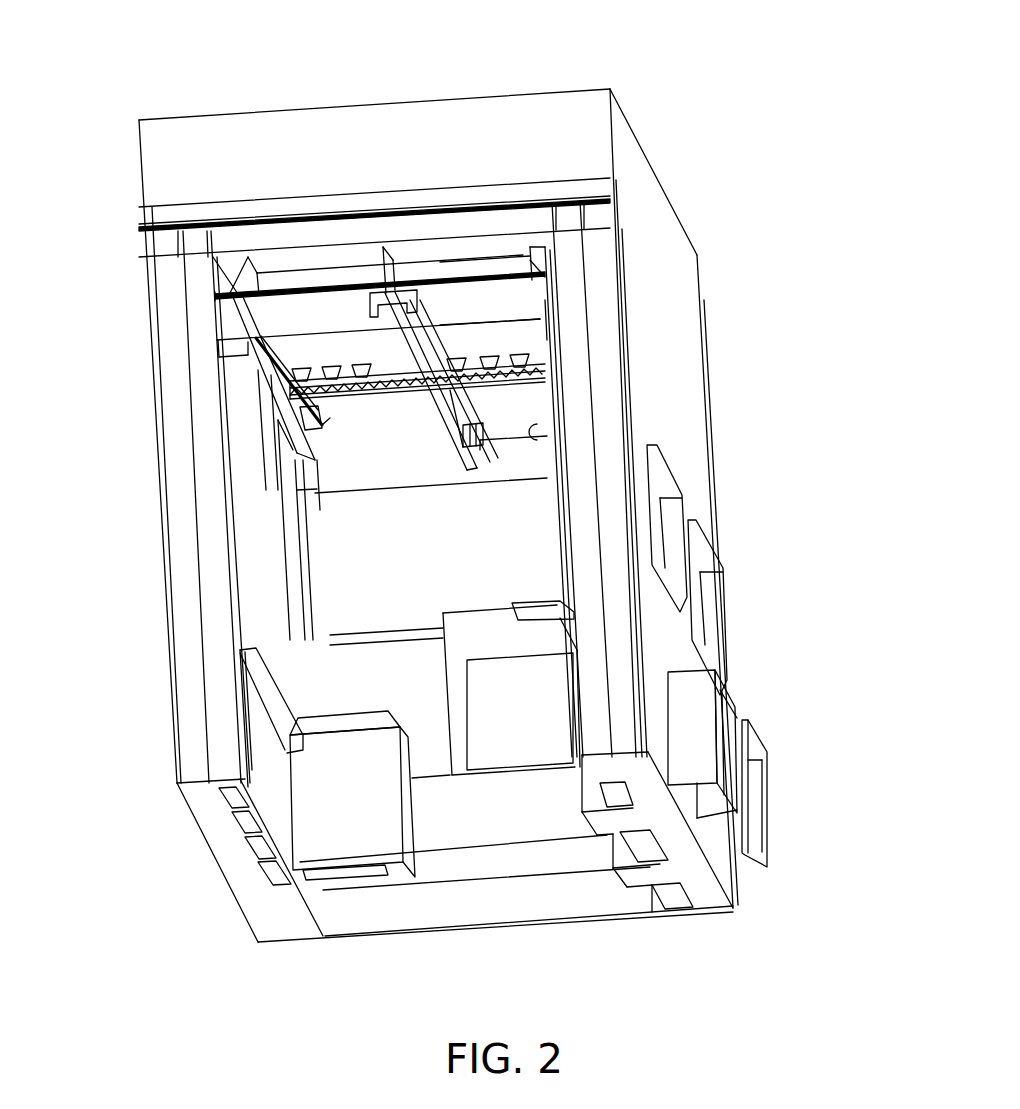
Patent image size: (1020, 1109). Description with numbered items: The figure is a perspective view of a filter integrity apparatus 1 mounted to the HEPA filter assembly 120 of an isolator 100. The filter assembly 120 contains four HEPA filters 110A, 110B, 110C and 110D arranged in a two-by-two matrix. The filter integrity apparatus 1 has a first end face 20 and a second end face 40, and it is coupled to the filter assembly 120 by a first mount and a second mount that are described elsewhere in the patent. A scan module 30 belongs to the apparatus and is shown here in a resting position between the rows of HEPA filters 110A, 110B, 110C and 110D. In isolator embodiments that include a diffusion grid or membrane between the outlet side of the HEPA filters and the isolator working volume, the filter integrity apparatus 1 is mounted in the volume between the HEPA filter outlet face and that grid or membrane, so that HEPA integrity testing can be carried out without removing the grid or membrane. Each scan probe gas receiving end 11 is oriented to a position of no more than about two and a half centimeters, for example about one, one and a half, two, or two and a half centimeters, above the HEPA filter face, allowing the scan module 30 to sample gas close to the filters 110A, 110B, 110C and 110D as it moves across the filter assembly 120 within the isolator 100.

The isolator 100 is at (165, 608).
The filter integrity apparatus 1 is at (300, 403).
The scan probe gas receiving end 11 is at (267, 390).
The first end face 20 is at (365, 300).
The scan module 30 is at (500, 355).
The second end face 40 is at (500, 455).
The HEPA filter 110A is at (307, 305).
The HEPA filter 110B is at (300, 422).
The HEPA filter 110C is at (477, 307).
The HEPA filter 110D is at (500, 402).
The HEPA filter assembly 120 is at (470, 277).